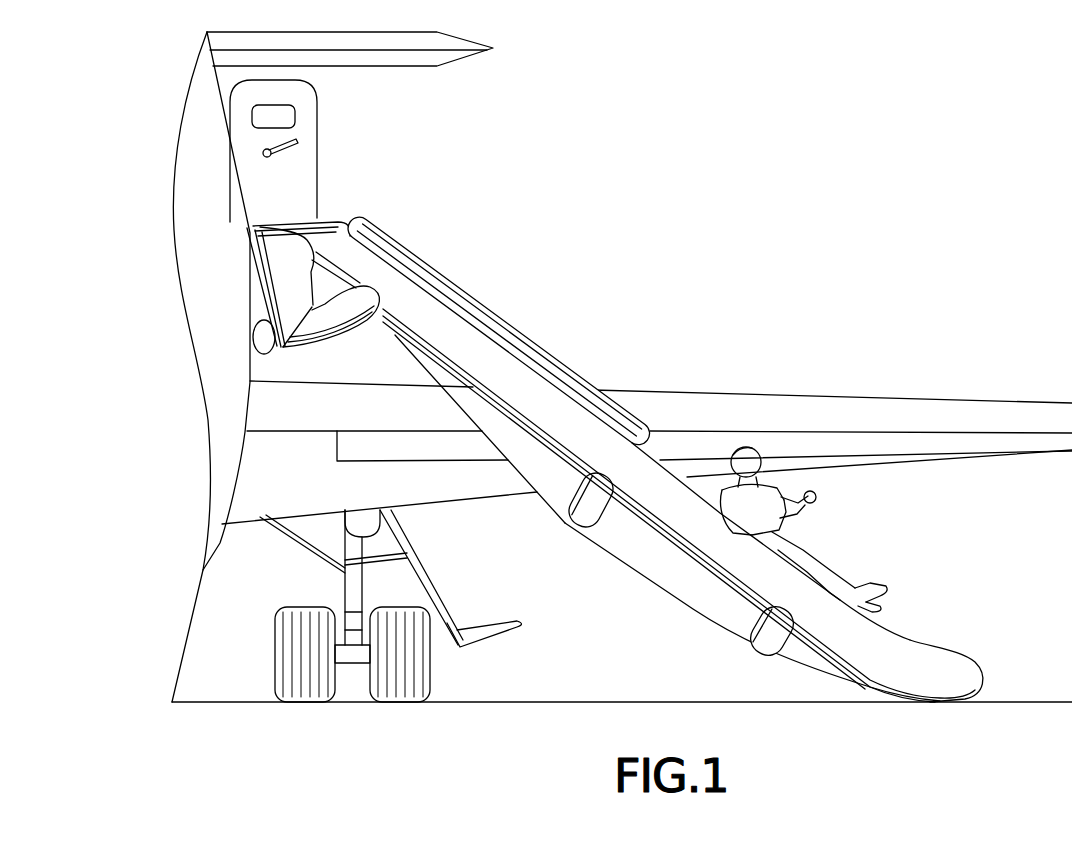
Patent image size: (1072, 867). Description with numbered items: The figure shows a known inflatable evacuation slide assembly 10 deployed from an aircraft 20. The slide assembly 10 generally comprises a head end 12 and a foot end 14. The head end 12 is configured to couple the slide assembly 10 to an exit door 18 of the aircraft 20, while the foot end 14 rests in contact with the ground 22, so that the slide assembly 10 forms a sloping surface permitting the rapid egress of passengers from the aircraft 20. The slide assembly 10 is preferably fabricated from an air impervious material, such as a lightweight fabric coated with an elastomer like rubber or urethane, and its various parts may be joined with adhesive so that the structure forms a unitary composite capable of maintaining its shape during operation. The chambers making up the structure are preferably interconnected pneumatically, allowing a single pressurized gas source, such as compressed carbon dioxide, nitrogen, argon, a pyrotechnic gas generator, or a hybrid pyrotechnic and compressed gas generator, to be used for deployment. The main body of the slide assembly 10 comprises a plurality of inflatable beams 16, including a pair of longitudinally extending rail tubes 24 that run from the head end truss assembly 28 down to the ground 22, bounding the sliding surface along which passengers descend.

The inflatable evacuation slide assembly 10 is at (633, 545).
The head end 12 is at (507, 305).
The foot end 14 is at (957, 633).
The inflatable beams 16 is at (679, 495).
The exit door 18 is at (300, 163).
The aircraft 20 is at (222, 540).
The ground 22 is at (684, 739).
The rail tubes 24 is at (410, 328).
The head end truss assembly 28 is at (312, 352).